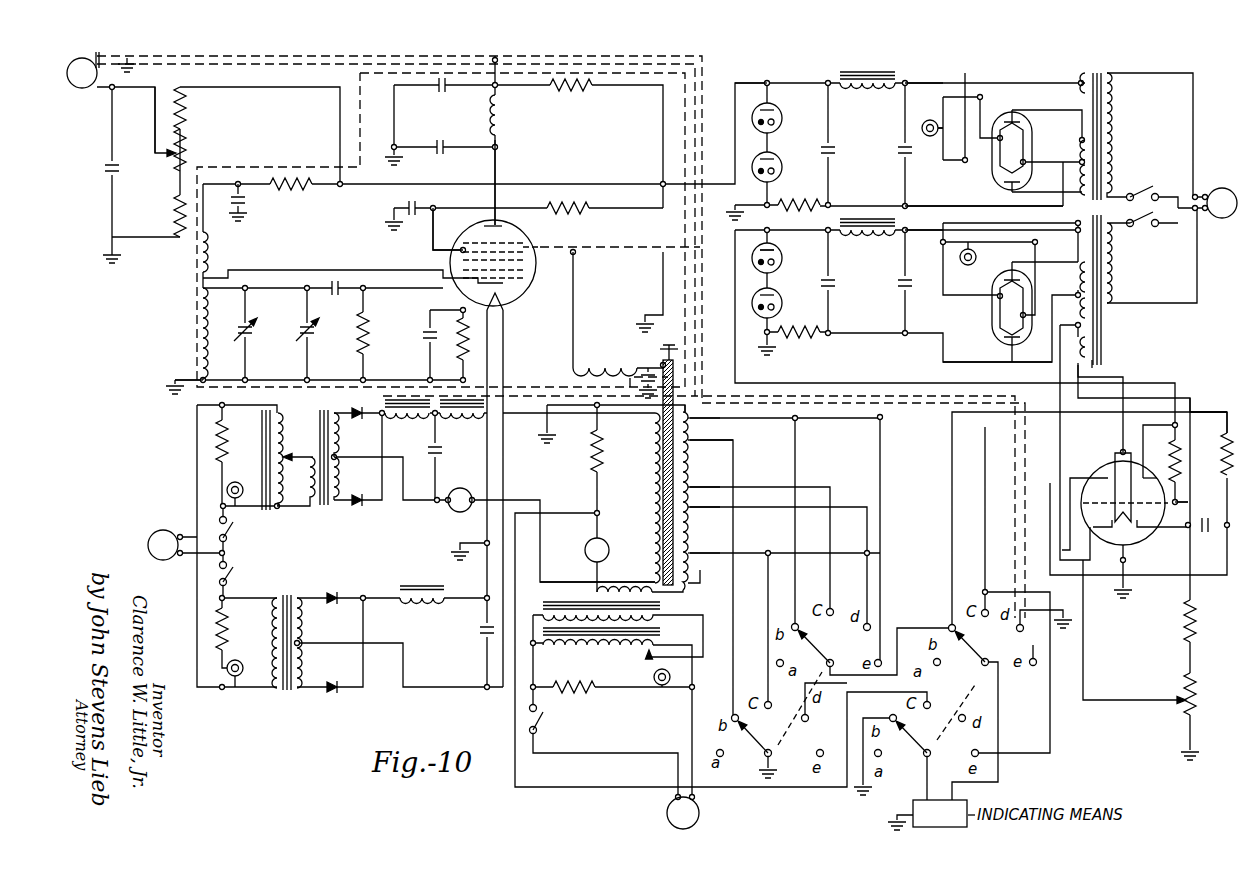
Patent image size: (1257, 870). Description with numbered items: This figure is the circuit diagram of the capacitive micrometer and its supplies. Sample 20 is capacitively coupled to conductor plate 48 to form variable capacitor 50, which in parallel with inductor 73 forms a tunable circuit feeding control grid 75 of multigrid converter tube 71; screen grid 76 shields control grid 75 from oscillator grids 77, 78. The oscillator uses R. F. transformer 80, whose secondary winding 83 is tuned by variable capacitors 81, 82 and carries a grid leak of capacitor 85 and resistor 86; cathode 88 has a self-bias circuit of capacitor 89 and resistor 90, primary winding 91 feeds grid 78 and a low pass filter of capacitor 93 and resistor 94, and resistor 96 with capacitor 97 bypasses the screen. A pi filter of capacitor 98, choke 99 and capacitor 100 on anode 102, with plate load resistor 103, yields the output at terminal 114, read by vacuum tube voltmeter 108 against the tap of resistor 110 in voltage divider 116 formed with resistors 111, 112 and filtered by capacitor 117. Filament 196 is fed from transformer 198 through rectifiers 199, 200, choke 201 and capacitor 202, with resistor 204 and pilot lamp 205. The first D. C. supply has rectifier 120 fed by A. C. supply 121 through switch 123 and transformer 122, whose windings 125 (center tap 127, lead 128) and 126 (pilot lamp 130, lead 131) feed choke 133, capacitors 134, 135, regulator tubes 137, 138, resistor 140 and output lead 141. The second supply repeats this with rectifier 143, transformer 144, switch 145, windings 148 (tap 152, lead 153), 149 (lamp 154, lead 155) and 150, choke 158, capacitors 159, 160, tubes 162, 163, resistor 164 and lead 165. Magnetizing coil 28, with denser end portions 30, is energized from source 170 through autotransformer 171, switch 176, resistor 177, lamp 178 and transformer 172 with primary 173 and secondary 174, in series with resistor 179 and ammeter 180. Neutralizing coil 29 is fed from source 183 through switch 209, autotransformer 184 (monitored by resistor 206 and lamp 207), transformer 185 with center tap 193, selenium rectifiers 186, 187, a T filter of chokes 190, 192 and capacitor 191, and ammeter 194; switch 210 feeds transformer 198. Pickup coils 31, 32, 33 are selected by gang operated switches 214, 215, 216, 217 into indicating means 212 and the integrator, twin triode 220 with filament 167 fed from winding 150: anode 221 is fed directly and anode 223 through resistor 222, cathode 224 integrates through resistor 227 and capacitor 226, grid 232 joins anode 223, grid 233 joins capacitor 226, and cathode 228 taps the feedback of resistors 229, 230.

The sample 20 is at (685, 522).
The magnetizing coil 28 is at (700, 462).
The neutralizing coil 29 is at (652, 455).
The end portions 30 is at (710, 518).
The pickup coil 31 is at (708, 420).
The pickup coil 32 is at (706, 490).
The pickup coil 33 is at (706, 553).
The electric conductor plate 48 is at (680, 350).
The variable capacitor 50 is at (660, 352).
The multigrid converter vacuum tube 71 is at (505, 228).
The inductor 73 is at (605, 362).
The control grid 75 is at (525, 247).
The screen grid 76 is at (462, 247).
The oscillator grid 77 is at (526, 278).
The oscillator grid 78 is at (530, 265).
The R. F. transformer 80 is at (200, 288).
The variable capacitor 81 is at (247, 338).
The variable capacitor 82 is at (310, 338).
The secondary winding 83 is at (198, 335).
The capacitor 85 is at (337, 296).
The resistor 86 is at (371, 330).
The cathode 88 is at (508, 300).
The capacitor 89 is at (425, 345).
The resistor 90 is at (460, 345).
The primary winding 91 is at (209, 268).
The capacitor 93 is at (244, 204).
The resistor 94 is at (292, 192).
The resistor 96 is at (598, 208).
The capacitor 97 is at (405, 204).
The capacitor 98 is at (445, 142).
The R. F. choke 99 is at (498, 118).
The capacitor 100 is at (438, 92).
The anode 102 is at (496, 214).
The plate load resistor 103 is at (570, 92).
The vacuum tube voltmeter 108 is at (78, 88).
The resistor 110 is at (190, 150).
The fixed resistor 111 is at (176, 214).
The fixed resistor 112 is at (190, 104).
The output terminal 114 is at (90, 51).
The voltage divider 116 is at (152, 189).
The capacitor 117 is at (105, 172).
The vacuum tube 120 is at (1028, 140).
The alternating current power supply 121 is at (1219, 190).
The transformer 122 is at (1110, 74).
The switching means 123 is at (1148, 186).
The secondary winding 125 is at (1080, 148).
The secondary winding 126 is at (1085, 74).
The center tap 127 is at (1080, 182).
The first output lead 128 is at (980, 206).
The pilot lamp 130 is at (926, 124).
The second output lead 131 is at (912, 82).
The choke 133 is at (867, 67).
The capacitor 134 is at (900, 158).
The capacitor 135 is at (840, 142).
The voltage regulator tube 137 is at (781, 122).
The voltage regulator tube 138 is at (781, 160).
The current limiting resistor 140 is at (795, 200).
The filter output lead 141 is at (806, 77).
The vacuum tube 143 is at (992, 312).
The transformer 144 is at (1100, 363).
The switching means 145 is at (1148, 229).
The secondary winding 148 is at (1080, 264).
The secondary winding 149 is at (1081, 283).
The third secondary winding 150 is at (1080, 352).
The center tap 152 is at (1080, 300).
The first output lead 153 is at (980, 360).
The pilot lamp 154 is at (964, 266).
The second output lead 155 is at (925, 226).
The choke 158 is at (867, 239).
The capacitor 159 is at (900, 283).
The capacitor 160 is at (836, 285).
The voltage regulator tube 162 is at (782, 265).
The voltage regulator tube 163 is at (782, 302).
The current limiting resistor 164 is at (800, 340).
The filter output lead 165 is at (782, 253).
The filament 167 is at (1118, 458).
The alternating current supply source 170 is at (700, 813).
The autotransformer 171 is at (604, 648).
The transformer 172 is at (660, 601).
The primary winding 173 is at (552, 612).
The secondary winding 174 is at (630, 583).
The switch 176 is at (542, 722).
The resistor 177 is at (598, 695).
The pilot lamp 178 is at (654, 677).
The noninductive resistor 179 is at (592, 456).
The ammeter 180 is at (606, 543).
The alternating current source 183 is at (175, 530).
The autotransformer 184 is at (283, 432).
The transformer 185 is at (322, 508).
The selenium rectifier 186 is at (340, 432).
The selenium rectifier 187 is at (360, 508).
The choke 190 is at (407, 419).
The capacitor 191 is at (428, 451).
The choke 192 is at (460, 419).
The center tap 193 is at (338, 462).
The ammeter 194 is at (450, 510).
The filament 196 is at (497, 320).
The transformer 198 is at (295, 596).
The rectifier 199 is at (328, 606).
The rectifier 200 is at (312, 695).
The choke 201 is at (410, 606).
The capacitor 202 is at (480, 641).
The resistor 204 is at (226, 640).
The pilot lamp 205 is at (237, 680).
The resistor 206 is at (218, 434).
The lamp 207 is at (238, 508).
The switch 209 is at (232, 533).
The switch 210 is at (230, 572).
The indicating means 212 is at (947, 824).
The switch 214 is at (848, 653).
The switch 215 is at (805, 755).
The switch 216 is at (1008, 652).
The switch 217 is at (960, 767).
The twin triode vacuum tube 220 is at (1090, 476).
The anode 221 is at (1172, 462).
The resistor 222 is at (1214, 422).
The anode 223 is at (1107, 487).
The cathode 224 is at (1143, 535).
The capacitor 226 is at (1205, 533).
The resistor 227 is at (1227, 412).
The cathode 228 is at (1100, 535).
The fixed resistor 229 is at (1195, 620).
The variable resistor 230 is at (1196, 700).
The grid 232 is at (1180, 505).
The grid 233 is at (1088, 492).